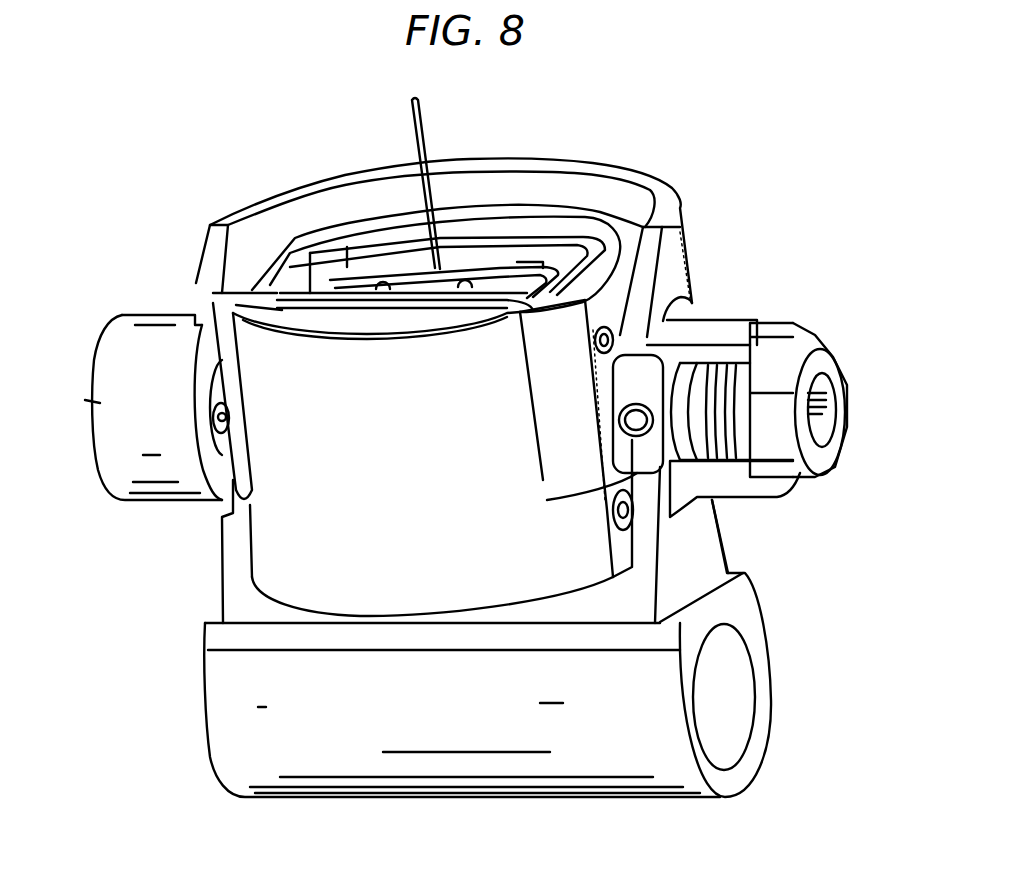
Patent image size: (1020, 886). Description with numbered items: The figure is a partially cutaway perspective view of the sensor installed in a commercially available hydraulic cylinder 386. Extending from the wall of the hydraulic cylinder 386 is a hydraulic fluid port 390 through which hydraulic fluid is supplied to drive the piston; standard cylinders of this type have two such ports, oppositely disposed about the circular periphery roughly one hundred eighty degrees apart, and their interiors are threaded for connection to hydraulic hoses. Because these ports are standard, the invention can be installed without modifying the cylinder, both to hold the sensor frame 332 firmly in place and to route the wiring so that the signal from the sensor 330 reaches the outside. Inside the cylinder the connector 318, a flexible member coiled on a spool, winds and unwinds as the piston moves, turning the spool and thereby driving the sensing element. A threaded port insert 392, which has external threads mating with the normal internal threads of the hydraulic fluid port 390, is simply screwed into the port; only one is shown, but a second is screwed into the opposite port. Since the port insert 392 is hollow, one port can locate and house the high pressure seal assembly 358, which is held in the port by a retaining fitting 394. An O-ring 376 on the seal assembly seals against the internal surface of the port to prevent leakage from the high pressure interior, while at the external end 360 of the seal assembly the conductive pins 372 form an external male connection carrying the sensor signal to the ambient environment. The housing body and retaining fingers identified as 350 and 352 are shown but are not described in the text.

The connector 318 is at (422, 126).
The sensor 330 is at (482, 256).
The sensor frame 332 is at (395, 228).
The housing 350 is at (578, 210).
The retaining fingers 352 is at (210, 303).
The high pressure seal assembly 358 is at (713, 500).
The external end 360 is at (823, 397).
The conductive pins 372 is at (822, 430).
The O-ring 376 is at (718, 382).
The hydraulic cylinder 386 is at (628, 173).
The hydraulic fluid port 390 is at (100, 402).
The threaded port insert 392 is at (645, 388).
The retaining fitting 394 is at (791, 353).